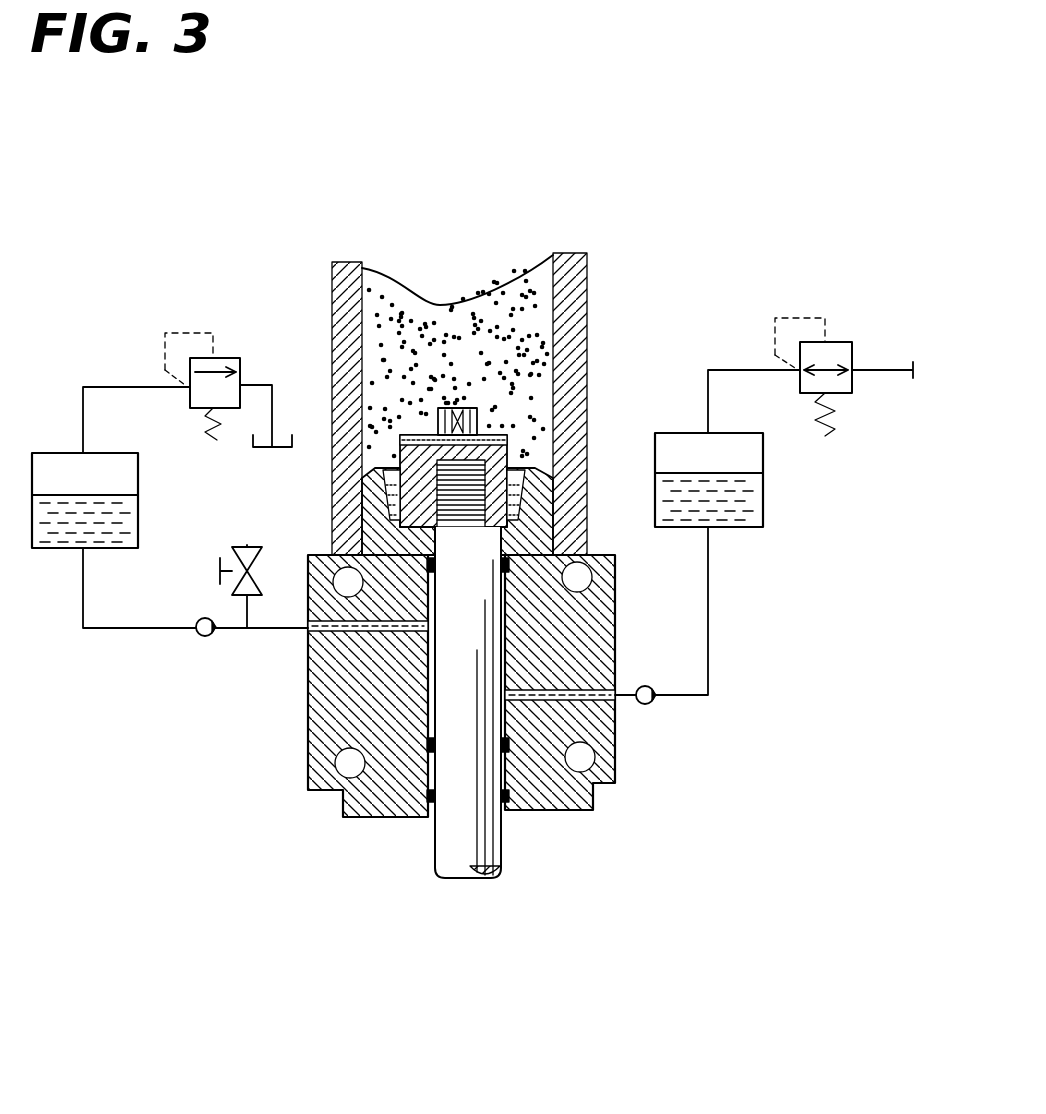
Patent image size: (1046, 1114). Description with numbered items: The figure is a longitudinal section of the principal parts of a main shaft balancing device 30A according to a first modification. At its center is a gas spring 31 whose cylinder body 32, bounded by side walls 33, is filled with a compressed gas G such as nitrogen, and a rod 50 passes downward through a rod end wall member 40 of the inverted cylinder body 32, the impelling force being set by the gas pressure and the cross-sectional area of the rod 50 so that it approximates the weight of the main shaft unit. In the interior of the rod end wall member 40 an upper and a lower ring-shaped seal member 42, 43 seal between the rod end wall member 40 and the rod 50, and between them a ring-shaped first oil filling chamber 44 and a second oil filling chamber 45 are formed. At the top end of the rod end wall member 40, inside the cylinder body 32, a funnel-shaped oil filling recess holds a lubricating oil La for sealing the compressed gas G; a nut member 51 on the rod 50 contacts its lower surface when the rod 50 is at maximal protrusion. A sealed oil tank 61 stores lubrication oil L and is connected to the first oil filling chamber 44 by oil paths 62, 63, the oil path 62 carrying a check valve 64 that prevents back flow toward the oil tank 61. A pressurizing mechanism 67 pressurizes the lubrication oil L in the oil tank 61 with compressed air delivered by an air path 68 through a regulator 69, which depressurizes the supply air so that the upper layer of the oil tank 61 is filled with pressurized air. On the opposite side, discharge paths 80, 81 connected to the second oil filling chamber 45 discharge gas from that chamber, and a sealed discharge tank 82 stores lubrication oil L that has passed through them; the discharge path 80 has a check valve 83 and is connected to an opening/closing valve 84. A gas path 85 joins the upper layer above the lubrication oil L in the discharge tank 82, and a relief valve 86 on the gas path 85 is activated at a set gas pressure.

The main shaft balancing device 30A is at (114, 220).
The gas spring 31 is at (655, 197).
The cylinder body 32 is at (316, 262).
The container side wall 33 is at (332, 362).
The compressed gas G is at (590, 273).
The rod end wall member 40 is at (597, 797).
The ring-shaped seal member 42 is at (515, 545).
The ring-shaped seal member 43 is at (515, 760).
The first oil filling chamber 44 is at (408, 709).
The second oil filling chamber 45 is at (520, 633).
The rod 50 is at (424, 862).
The nut member 51 is at (420, 433).
The lubricating oil La is at (517, 470).
The lubrication oil L is at (62, 545).
The oil tank 61 is at (765, 490).
The oil path 62 is at (712, 648).
The oil path 63 is at (600, 712).
The check valve 64 is at (655, 703).
The pressurizing mechanism 67 is at (819, 242).
The air path 68 is at (735, 368).
The regulator 69 is at (845, 342).
The discharge path 80 is at (350, 625).
The discharge path 81 is at (125, 630).
The discharge tank 82 is at (140, 495).
The check valve 83 is at (210, 640).
The opening/closing valve 84 is at (249, 545).
The gas path 85 is at (125, 387).
The relief valve 86 is at (232, 358).